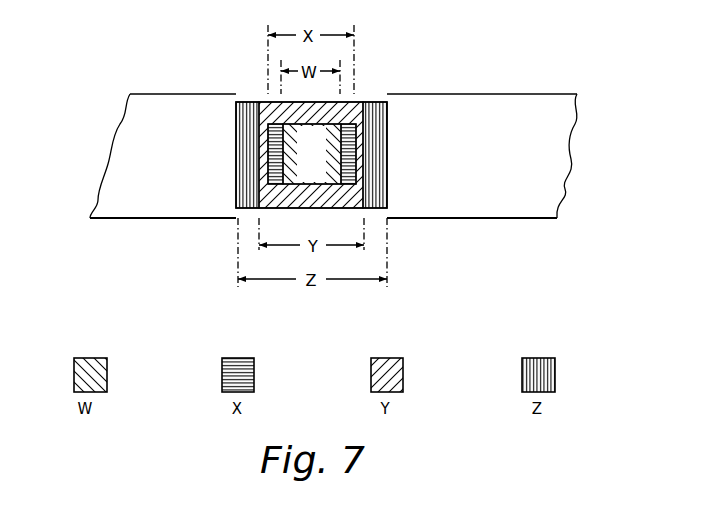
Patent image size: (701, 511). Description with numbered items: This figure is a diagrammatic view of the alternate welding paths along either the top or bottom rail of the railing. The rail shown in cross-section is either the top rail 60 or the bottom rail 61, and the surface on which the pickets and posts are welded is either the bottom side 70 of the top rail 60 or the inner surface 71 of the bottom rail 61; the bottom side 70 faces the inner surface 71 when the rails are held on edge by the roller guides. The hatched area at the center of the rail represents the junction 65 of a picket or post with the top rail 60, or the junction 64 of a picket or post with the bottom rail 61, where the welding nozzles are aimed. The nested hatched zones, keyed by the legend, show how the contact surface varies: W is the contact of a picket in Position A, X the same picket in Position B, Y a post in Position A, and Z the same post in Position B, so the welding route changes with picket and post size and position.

The bottom side 70 is at (159, 141).
The inner surface 71 is at (159, 178).
The top rail 60 is at (473, 141).
The bottom rail 61 is at (473, 178).
The junction 65 is at (311, 155).
The junction 64 is at (302, 178).